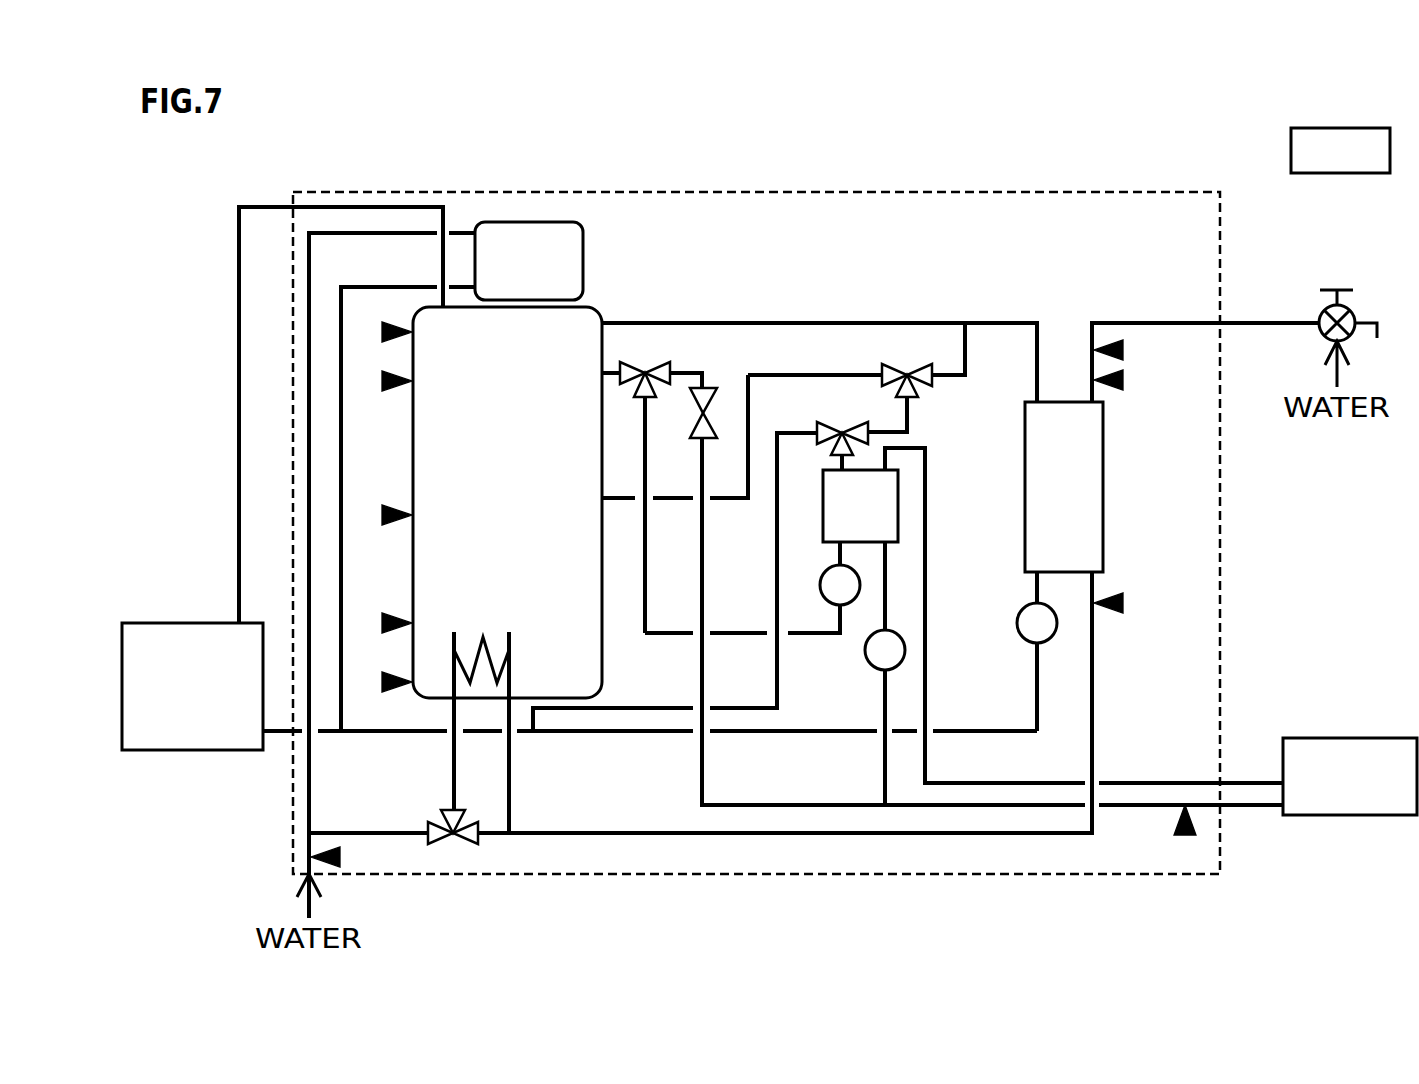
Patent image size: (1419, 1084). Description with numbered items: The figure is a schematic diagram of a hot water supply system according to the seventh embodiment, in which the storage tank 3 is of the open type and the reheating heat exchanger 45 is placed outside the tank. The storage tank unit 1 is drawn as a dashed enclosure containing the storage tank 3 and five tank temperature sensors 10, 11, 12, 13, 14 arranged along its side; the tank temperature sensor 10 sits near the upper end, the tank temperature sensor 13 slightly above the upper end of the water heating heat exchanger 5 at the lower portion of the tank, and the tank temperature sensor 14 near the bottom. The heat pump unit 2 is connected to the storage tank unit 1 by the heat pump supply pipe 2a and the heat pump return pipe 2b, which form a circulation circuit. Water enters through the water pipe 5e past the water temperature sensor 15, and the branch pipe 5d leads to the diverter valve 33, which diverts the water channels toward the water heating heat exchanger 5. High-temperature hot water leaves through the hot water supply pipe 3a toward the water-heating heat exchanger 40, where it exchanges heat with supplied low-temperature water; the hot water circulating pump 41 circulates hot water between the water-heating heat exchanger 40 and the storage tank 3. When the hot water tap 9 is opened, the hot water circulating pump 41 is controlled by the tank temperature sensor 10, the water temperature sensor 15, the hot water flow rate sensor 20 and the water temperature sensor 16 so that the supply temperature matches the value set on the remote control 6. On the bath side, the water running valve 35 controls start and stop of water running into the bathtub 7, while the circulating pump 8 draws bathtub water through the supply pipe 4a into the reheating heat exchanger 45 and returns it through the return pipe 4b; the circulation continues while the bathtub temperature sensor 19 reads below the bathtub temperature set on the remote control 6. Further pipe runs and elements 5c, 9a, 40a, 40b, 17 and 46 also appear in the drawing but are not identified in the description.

The storage tank unit 1 is at (402, 190).
The heat pump unit 2 is at (192, 623).
The heat pump supply pipe 2a is at (280, 736).
The heat pump return pipe 2b is at (239, 475).
The storage tank 3 is at (413, 455).
The hot water supply pipe 3a is at (819, 345).
The supply pipe 4a is at (992, 639).
The return pipe 4b is at (1084, 616).
The water heating heat exchanger 5 is at (468, 627).
The water supply branch pipe 5c is at (786, 814).
The branch pipe 5d is at (368, 814).
The water pipe 5e is at (309, 363).
The remote control 6 is at (1340, 168).
The bathtub 7 is at (1350, 792).
The circulating pump 8 is at (875, 673).
The hot water tap 9 is at (1339, 306).
The water supply pipe 9a is at (1204, 306).
The tank temperature sensor 10 is at (381, 331).
The tank temperature sensor 11 is at (381, 379).
The tank temperature sensor 12 is at (381, 514).
The tank temperature sensor 13 is at (381, 622).
The tank temperature sensor 14 is at (381, 681).
The water temperature sensor 15 is at (342, 855).
The water temperature sensor 16 is at (1124, 602).
The temperature sensor 17 is at (1124, 381).
The bathtub temperature sensor 19 is at (1187, 836).
The hot water flow rate sensor 20 is at (1124, 351).
The diverter valve 33 is at (453, 842).
The water running valve 35 is at (688, 413).
The water-heating heat exchanger 40 is at (1047, 487).
The heat exchanger outlet pipe 40a is at (1118, 579).
The heat exchanger return pipe 40b is at (828, 746).
The hot water circulating pump 41 is at (1020, 651).
The reheating heat exchanger 45 is at (842, 498).
The circulation pump 46 is at (752, 587).